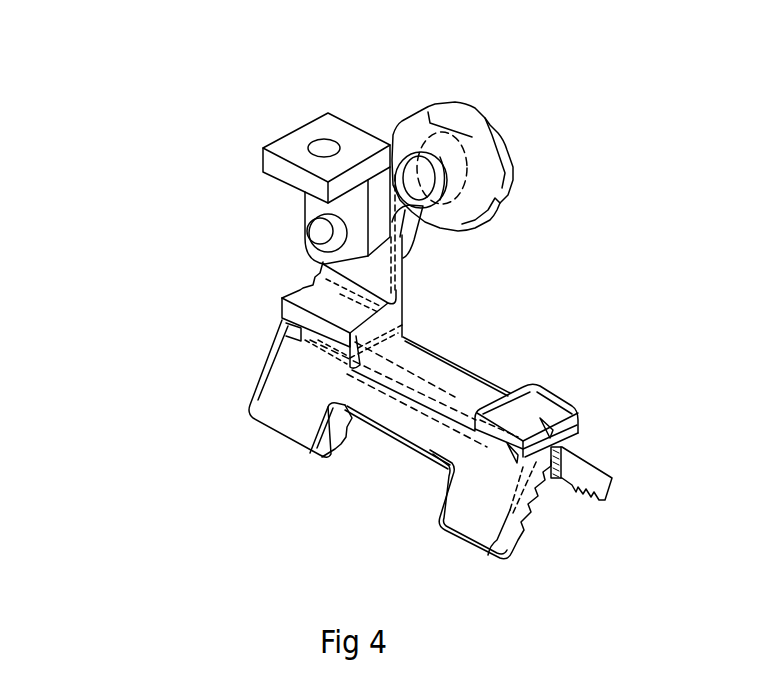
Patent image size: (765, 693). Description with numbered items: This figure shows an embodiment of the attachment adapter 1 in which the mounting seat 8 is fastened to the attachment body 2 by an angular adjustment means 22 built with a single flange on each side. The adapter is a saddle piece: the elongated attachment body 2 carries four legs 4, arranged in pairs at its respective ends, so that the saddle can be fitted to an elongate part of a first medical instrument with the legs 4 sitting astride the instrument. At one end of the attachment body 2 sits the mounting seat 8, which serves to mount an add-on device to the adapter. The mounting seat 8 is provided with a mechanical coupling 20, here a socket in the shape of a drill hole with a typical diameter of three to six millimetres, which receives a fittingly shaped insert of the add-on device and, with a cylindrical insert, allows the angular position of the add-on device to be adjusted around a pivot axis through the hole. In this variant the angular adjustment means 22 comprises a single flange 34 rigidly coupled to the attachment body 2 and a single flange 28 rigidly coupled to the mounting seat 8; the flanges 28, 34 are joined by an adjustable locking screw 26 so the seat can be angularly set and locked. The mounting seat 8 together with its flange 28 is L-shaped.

The attachment adapter 1 is at (195, 172).
The attachment body 2 is at (440, 380).
The legs 4 is at (303, 418).
The mounting seat 8 is at (293, 148).
The mechanical coupling 20 is at (324, 148).
The angular adjustment means 22 is at (287, 217).
The adjustable locking screw 26 is at (490, 160).
The flange 28 is at (350, 257).
The flange 34 is at (398, 208).